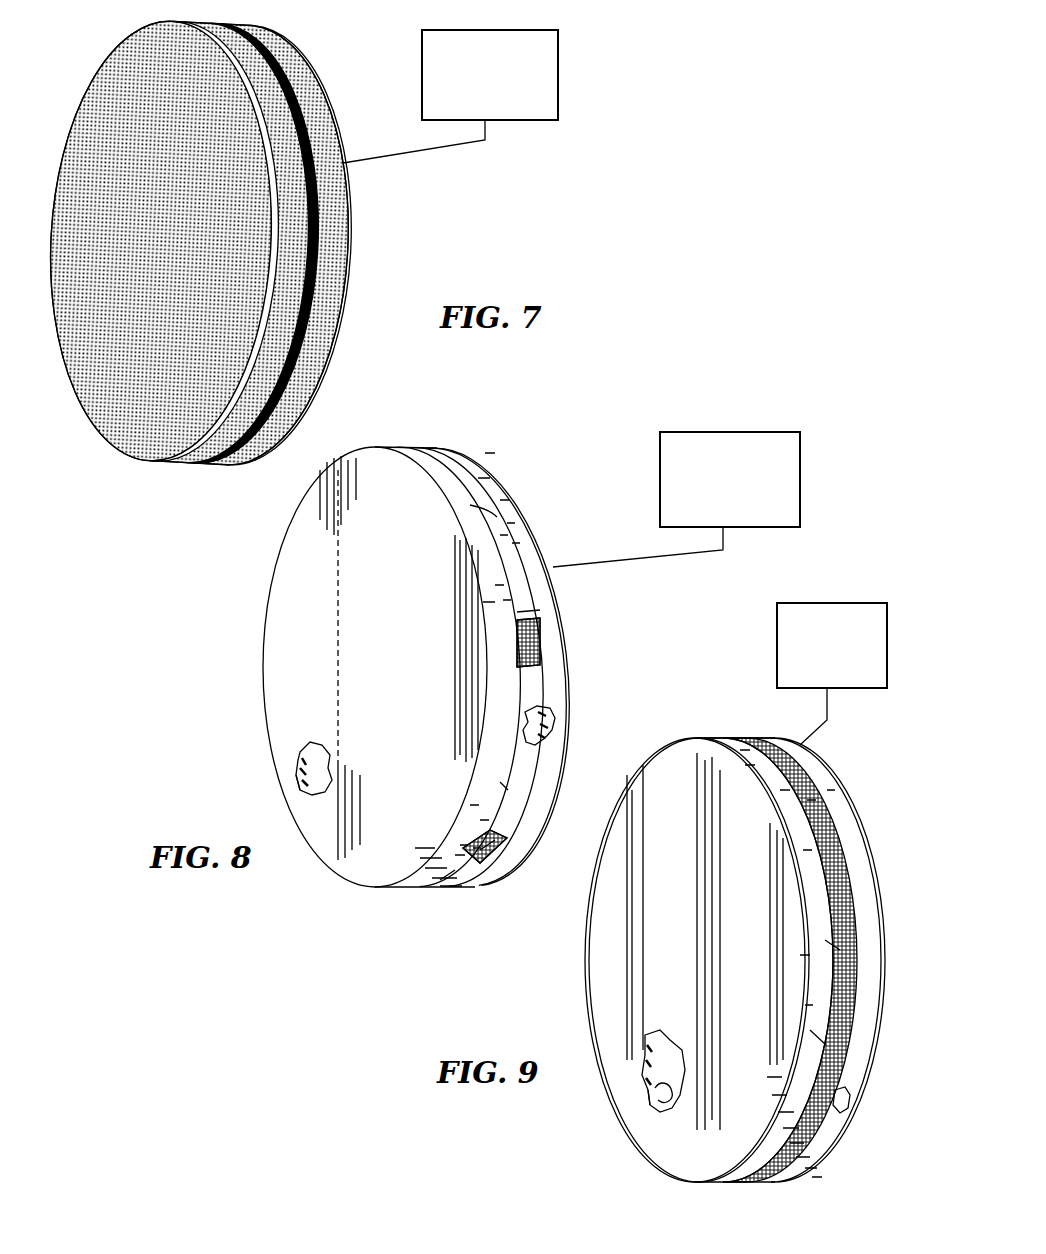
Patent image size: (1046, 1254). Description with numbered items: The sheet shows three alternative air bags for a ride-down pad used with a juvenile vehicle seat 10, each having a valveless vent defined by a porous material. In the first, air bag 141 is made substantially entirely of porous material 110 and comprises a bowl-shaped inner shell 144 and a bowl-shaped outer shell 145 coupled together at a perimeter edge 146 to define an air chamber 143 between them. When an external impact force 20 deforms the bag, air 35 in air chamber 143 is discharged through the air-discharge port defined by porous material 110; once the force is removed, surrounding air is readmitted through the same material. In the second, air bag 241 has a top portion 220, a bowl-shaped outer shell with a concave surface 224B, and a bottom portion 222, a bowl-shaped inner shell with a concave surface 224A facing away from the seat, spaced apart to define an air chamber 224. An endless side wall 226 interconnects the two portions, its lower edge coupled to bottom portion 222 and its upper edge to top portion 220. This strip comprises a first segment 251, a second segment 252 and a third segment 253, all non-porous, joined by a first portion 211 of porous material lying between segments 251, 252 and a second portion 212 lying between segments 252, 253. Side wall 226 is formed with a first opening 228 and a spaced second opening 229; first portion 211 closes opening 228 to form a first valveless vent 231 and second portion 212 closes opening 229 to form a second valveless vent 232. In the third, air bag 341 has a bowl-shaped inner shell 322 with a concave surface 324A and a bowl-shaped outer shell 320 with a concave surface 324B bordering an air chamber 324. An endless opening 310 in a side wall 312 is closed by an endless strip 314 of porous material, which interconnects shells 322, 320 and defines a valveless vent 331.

In FIG. 7, the juvenile vehicle seat 10 is at (558, 82).
In FIG. 8, the juvenile vehicle seat 10 is at (731, 431).
In FIG. 9, the juvenile vehicle seat 10 is at (837, 603).
In FIG. 7, the external impact force 20 is at (72, 145).
In FIG. 8, the external impact force 20 is at (323, 603).
In FIG. 9, the external impact force 20 is at (612, 974).
In FIG. 7, the air 35 is at (328, 34).
In FIG. 8, the air 35 is at (530, 867).
In FIG. 9, the air 35 is at (687, 731).
In FIG. 7, the porous material 110 is at (335, 293).
In FIG. 7, the air bag 141 is at (346, 118).
In FIG. 7, the air chamber 143 is at (145, 92).
In FIG. 7, the bowl-shaped inner shell 144 is at (280, 50).
In FIG. 7, the bowl-shaped outer shell 145 is at (137, 36).
In FIG. 7, the perimeter edge 146 is at (243, 36).
In FIG. 8, the first portion of porous material 211 is at (487, 847).
In FIG. 8, the second portion of porous material 212 is at (517, 663).
In FIG. 8, the top portion 220 is at (397, 442).
In FIG. 8, the bottom portion 222 is at (528, 497).
In FIG. 8, the air chamber 224 is at (316, 760).
In FIG. 8, the concave surface 224A is at (538, 746).
In FIG. 8, the concave surface 224B is at (296, 785).
In FIG. 8, the side wall 226 is at (470, 478).
In FIG. 8, the first opening 228 is at (473, 867).
In FIG. 8, the second opening 229 is at (527, 620).
In FIG. 8, the first valveless vent 231 is at (472, 840).
In FIG. 8, the second valveless vent 232 is at (513, 644).
In FIG. 8, the air bag 241 is at (549, 530).
In FIG. 8, the first segment 251 is at (448, 873).
In FIG. 8, the second segment 252 is at (508, 790).
In FIG. 8, the third segment 253 is at (470, 505).
In FIG. 9, the endless opening 310 is at (823, 868).
In FIG. 9, the side wall 312 is at (780, 733).
In FIG. 9, the endless strip 314 is at (818, 1038).
In FIG. 9, the bowl-shaped outer shell 320 is at (673, 773).
In FIG. 9, the bowl-shaped inner shell 322 is at (851, 797).
In FIG. 9, the air chamber 324 is at (662, 1058).
In FIG. 9, the concave surface 324A is at (843, 1114).
In FIG. 9, the concave surface 324B is at (648, 1110).
In FIG. 9, the valveless vent 331 is at (833, 945).
In FIG. 9, the air bag 341 is at (652, 1173).